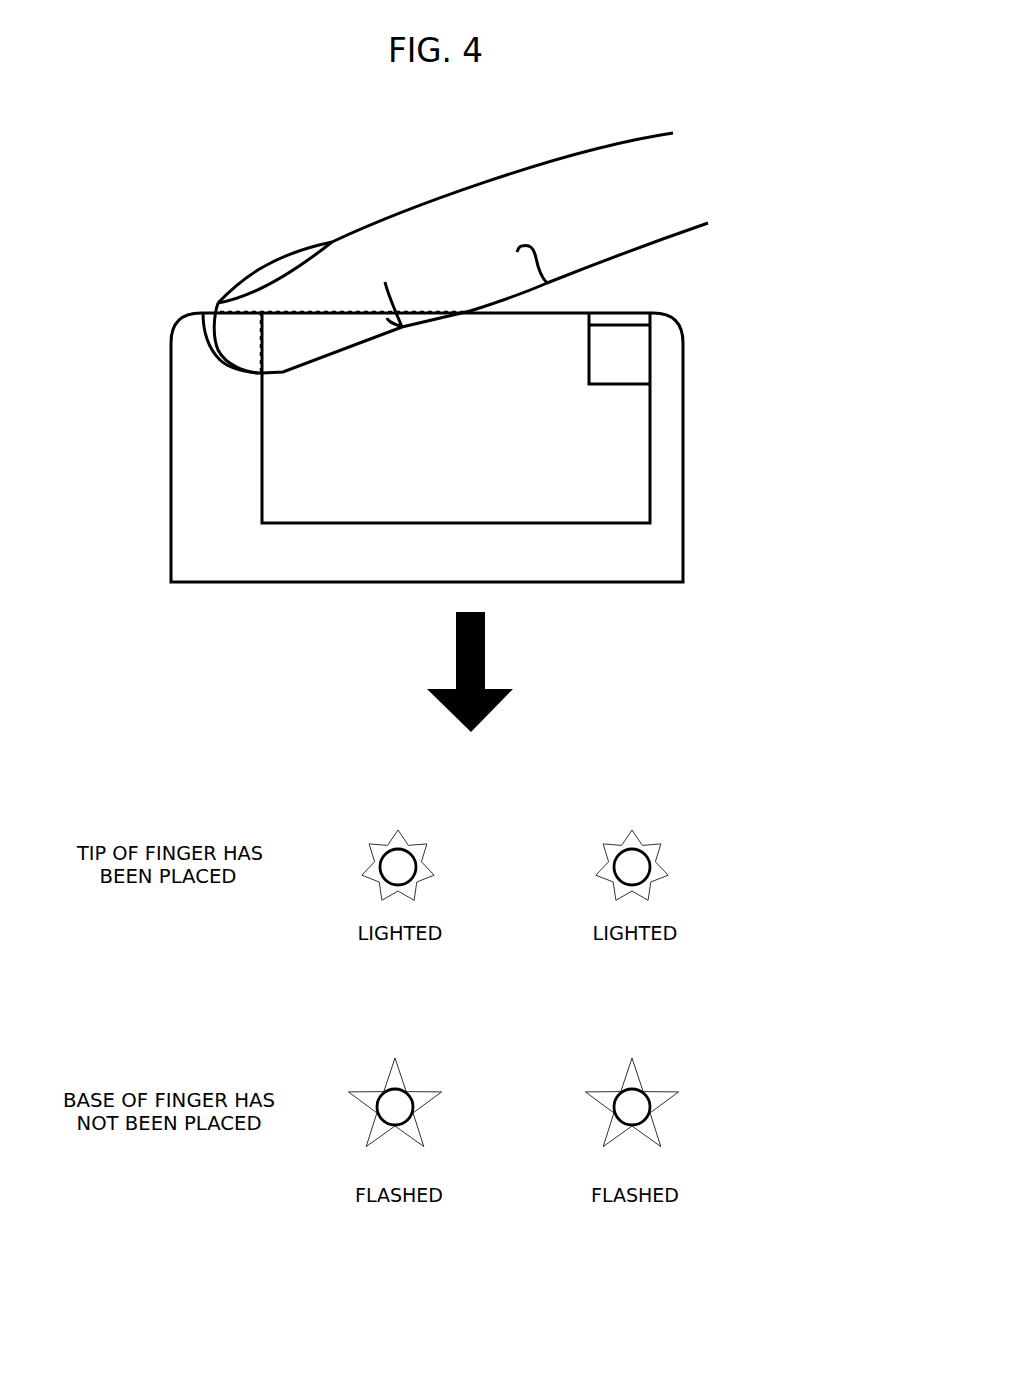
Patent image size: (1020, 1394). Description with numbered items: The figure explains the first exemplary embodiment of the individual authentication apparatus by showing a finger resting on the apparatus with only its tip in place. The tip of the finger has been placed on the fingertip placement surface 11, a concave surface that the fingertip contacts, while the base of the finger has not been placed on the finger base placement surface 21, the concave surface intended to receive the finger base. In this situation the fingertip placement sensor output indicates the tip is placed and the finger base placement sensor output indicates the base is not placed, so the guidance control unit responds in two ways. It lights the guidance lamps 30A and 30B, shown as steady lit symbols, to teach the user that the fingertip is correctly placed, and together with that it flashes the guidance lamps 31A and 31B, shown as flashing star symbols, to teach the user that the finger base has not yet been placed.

The fingertip placement surface 11 is at (225, 370).
The finger base placement surface 21 is at (598, 385).
The guidance lamp for a tip of a finger 30A is at (398, 830).
The guidance lamp for a tip of a finger 30B is at (633, 831).
The guidance lamp for a finger base 31A is at (437, 1038).
The guidance lamp for a finger base 31B is at (632, 1058).